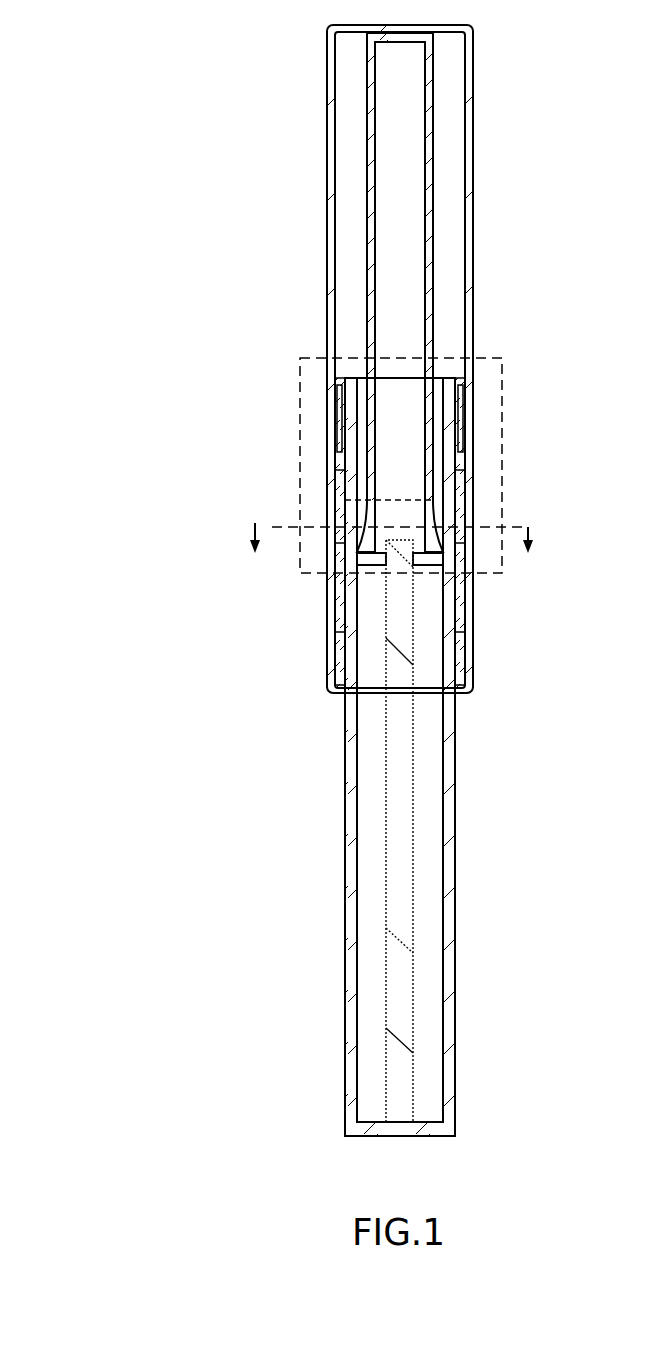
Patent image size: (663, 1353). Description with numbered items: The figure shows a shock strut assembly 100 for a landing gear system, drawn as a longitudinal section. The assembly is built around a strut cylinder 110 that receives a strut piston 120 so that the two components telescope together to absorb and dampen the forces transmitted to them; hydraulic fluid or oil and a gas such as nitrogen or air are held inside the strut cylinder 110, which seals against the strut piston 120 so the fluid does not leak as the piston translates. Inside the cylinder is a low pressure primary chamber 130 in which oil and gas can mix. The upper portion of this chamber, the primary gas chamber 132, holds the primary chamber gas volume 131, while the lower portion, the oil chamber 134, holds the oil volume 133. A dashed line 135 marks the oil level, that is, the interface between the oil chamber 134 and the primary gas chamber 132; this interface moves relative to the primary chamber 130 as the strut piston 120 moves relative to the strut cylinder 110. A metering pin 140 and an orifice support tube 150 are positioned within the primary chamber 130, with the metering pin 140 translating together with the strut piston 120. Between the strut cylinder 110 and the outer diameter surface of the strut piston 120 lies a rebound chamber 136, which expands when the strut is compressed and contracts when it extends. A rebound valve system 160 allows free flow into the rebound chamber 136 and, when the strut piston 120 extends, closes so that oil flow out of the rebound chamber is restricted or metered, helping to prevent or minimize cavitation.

The shock strut assembly 100 is at (150, 100).
The strut cylinder 110 is at (333, 290).
The strut piston 120 is at (348, 905).
The primary chamber 130 is at (352, 117).
The primary chamber gas volume 131 is at (350, 170).
The primary gas chamber 132 is at (350, 236).
The oil volume 133 is at (370, 1003).
The oil chamber 134 is at (427, 950).
The dashed line 135 is at (403, 498).
The rebound chamber 136 is at (345, 615).
The metering pin 140 is at (403, 1063).
The orifice support tube 150 is at (370, 338).
The rebound valve system 160 is at (310, 428).